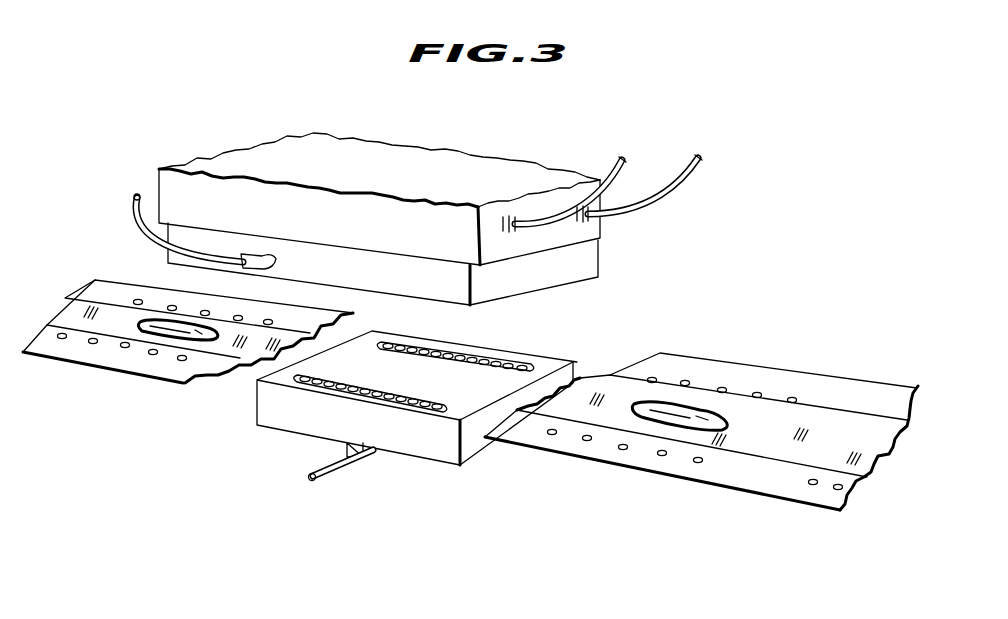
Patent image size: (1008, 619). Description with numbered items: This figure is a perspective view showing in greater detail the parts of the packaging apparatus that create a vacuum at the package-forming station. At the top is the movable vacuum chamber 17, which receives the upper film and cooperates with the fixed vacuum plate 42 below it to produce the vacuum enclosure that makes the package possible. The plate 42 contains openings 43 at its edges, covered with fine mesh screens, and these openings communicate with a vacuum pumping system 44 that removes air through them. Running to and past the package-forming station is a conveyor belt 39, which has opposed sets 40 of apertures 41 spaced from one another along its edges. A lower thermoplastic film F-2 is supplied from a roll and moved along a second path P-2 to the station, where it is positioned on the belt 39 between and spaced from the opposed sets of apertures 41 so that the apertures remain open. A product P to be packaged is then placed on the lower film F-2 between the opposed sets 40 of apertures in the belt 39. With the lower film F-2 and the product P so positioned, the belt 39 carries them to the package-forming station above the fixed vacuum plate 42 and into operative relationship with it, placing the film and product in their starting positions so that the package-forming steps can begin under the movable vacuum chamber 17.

The movable vacuum chamber 17 is at (340, 226).
The conveyor belt 39 is at (55, 348).
The opposed sets of apertures 40 is at (566, 452).
The apertures 41 is at (138, 298).
The fixed vacuum plate 42 is at (363, 430).
The openings 43 is at (421, 371).
The vacuum pumping system 44 is at (318, 481).
The product P is at (205, 336).
The lower thermoplastic film F-2 is at (827, 437).
The second path P-2 is at (785, 515).